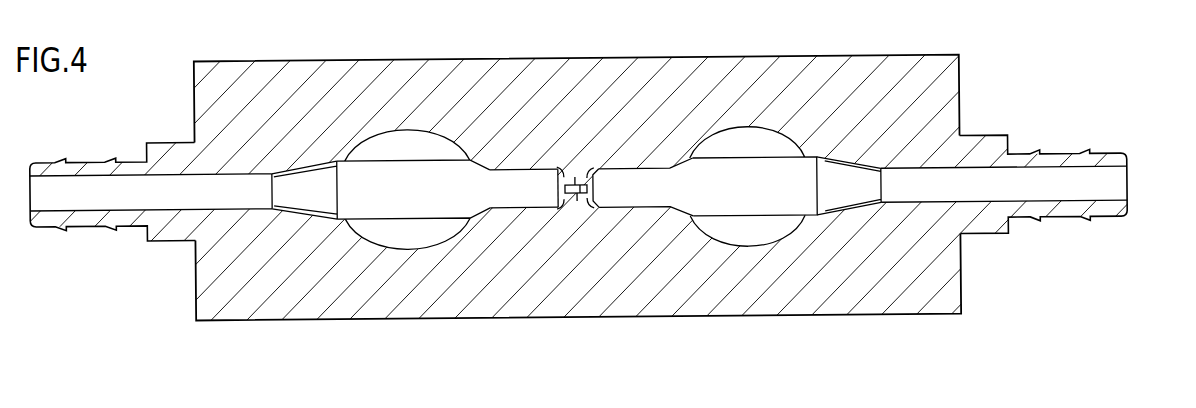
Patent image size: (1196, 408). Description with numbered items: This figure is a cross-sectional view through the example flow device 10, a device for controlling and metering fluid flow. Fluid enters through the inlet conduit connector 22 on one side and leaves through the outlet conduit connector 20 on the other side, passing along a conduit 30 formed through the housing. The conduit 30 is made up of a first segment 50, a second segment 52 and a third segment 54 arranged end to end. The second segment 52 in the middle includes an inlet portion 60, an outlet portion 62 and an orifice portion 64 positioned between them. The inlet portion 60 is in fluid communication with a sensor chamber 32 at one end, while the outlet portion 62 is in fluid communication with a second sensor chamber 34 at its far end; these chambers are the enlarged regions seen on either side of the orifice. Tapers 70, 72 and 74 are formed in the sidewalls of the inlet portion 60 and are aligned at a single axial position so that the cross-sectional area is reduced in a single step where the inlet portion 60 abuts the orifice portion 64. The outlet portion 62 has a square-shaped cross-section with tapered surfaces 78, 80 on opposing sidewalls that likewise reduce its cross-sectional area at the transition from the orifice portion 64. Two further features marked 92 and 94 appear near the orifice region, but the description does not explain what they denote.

The flow device 10 is at (1071, 104).
The outlet conduit connector 20 is at (978, 236).
The inlet conduit connector 22 is at (172, 243).
The conduit 30 is at (1106, 183).
The sensor chamber 32 is at (392, 202).
The sensor chamber 34 is at (770, 203).
The first segment 50 is at (271, 220).
The second segment 52 is at (581, 216).
The third segment 54 is at (916, 220).
The inlet portion 60 is at (516, 157).
The outlet portion 62 is at (639, 164).
The orifice portion 64 is at (581, 156).
The taper 70 is at (566, 167).
The taper 72 is at (566, 208).
The taper 74 is at (556, 190).
The tapered surface 78 is at (592, 166).
The tapered surface 80 is at (591, 207).
The lower slot 92 is at (577, 201).
The upper slot 94 is at (575, 177).